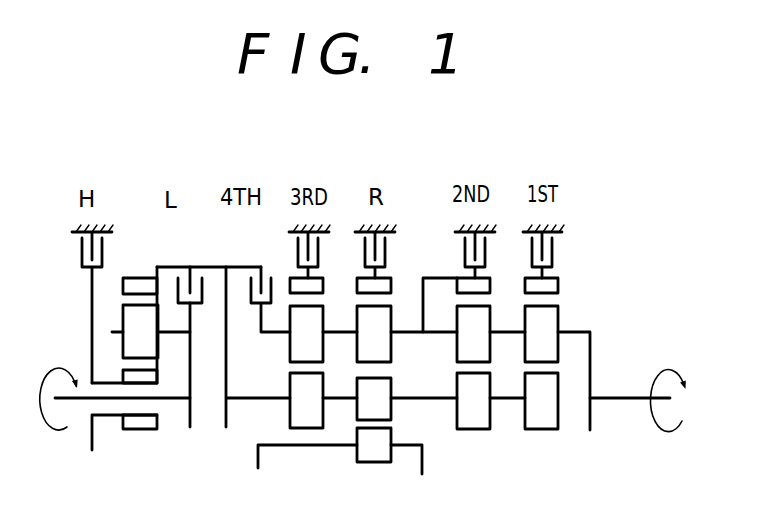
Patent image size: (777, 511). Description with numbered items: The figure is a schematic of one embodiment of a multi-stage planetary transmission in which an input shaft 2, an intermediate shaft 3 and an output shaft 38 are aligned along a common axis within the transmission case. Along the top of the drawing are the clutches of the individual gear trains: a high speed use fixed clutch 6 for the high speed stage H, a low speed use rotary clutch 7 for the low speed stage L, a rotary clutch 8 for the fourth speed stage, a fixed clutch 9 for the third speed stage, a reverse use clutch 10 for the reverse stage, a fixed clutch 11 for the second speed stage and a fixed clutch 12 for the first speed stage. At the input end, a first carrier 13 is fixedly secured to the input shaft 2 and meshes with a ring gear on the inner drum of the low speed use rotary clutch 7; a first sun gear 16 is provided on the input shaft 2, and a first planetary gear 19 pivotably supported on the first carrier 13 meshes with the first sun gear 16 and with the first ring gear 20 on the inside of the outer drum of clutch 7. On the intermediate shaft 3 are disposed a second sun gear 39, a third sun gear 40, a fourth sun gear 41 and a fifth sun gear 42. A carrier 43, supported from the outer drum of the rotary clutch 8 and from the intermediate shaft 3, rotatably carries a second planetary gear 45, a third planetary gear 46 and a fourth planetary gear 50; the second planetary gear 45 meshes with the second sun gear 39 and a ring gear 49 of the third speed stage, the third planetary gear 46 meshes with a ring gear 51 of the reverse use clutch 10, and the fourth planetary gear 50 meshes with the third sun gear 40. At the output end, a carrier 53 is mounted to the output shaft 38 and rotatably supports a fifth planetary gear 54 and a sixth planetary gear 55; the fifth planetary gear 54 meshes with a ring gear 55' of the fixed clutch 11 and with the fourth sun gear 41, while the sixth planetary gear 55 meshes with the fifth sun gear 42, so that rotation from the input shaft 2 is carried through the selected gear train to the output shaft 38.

The input shaft 2 is at (77, 398).
The intermediate shaft 3 is at (239, 400).
The high speed use fixed clutch 6 is at (82, 273).
The low speed use rotary clutch 7 is at (199, 278).
The rotary clutch 8 is at (264, 277).
The fixed clutch 9 is at (321, 250).
The reverse use clutch 10 is at (388, 250).
The fixed clutch 11 is at (488, 250).
The fixed clutch 12 is at (557, 258).
The first carrier 13 is at (193, 368).
The first sun gear 16 is at (130, 429).
The first planetary gear 19 is at (123, 308).
The first ring gear 20 is at (131, 277).
The output shaft 38 is at (607, 400).
The second sun gear 39 is at (303, 425).
The third sun gear 40 is at (391, 406).
The fourth sun gear 41 is at (473, 420).
The fifth sun gear 42 is at (544, 420).
The carrier 43 is at (340, 332).
The second planetary gear 45 is at (290, 352).
The third planetary gear 46 is at (391, 341).
The ring gear 49 is at (319, 278).
The fourth planetary gear 50 is at (376, 463).
The ring gear 51 is at (390, 278).
The carrier 53 is at (588, 332).
The fifth planetary gear 54 is at (456, 362).
The sixth planetary gear 55 is at (527, 344).
The ring gear 55' is at (489, 268).